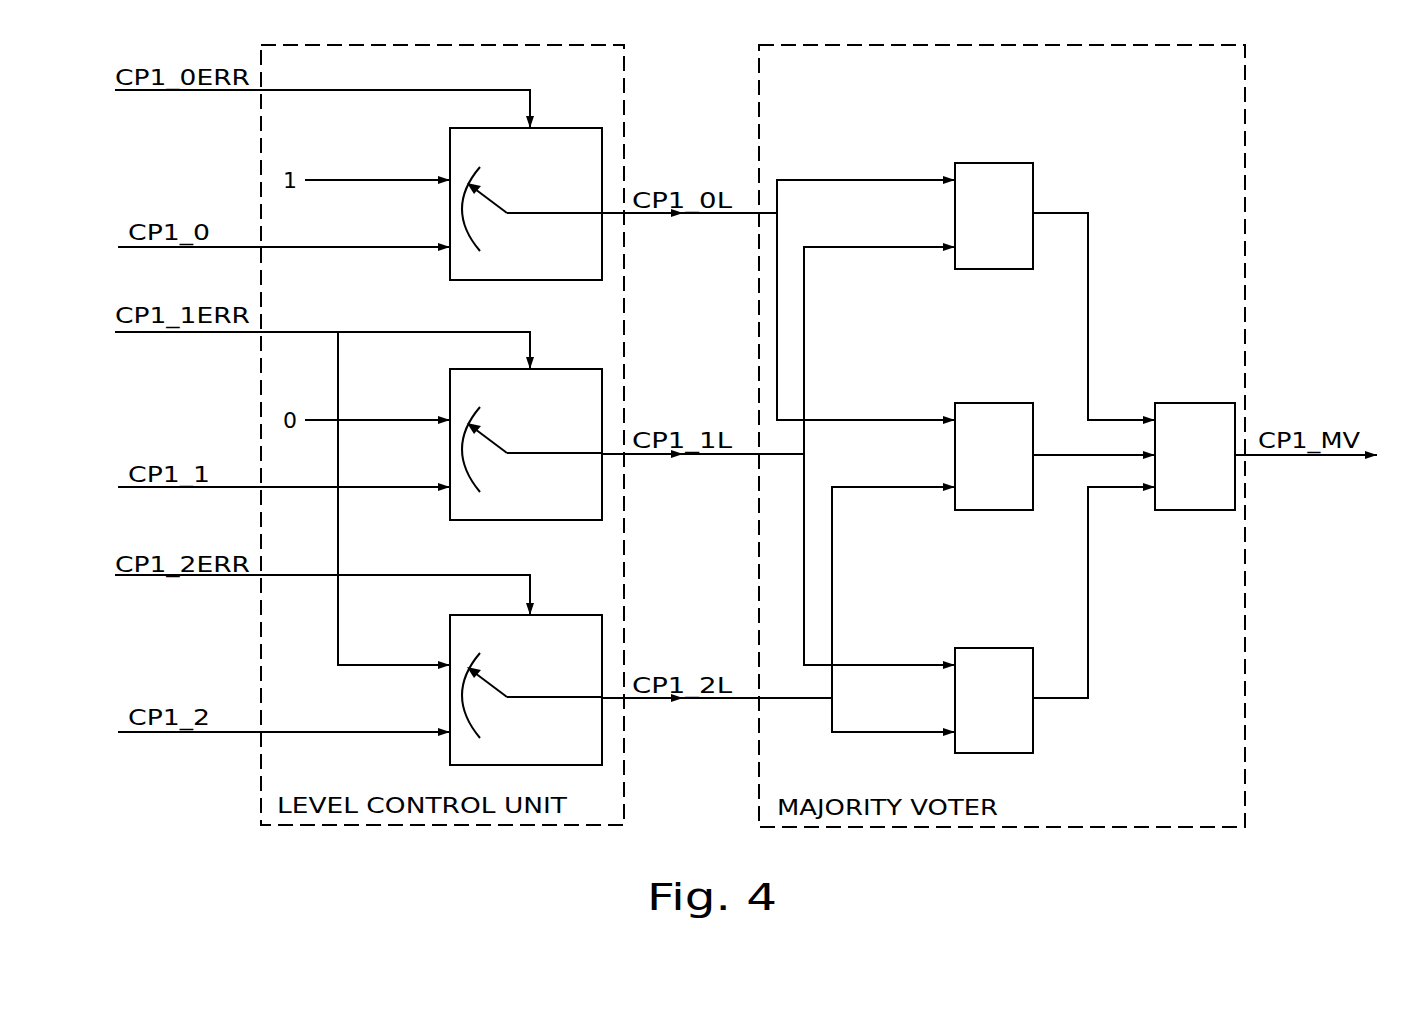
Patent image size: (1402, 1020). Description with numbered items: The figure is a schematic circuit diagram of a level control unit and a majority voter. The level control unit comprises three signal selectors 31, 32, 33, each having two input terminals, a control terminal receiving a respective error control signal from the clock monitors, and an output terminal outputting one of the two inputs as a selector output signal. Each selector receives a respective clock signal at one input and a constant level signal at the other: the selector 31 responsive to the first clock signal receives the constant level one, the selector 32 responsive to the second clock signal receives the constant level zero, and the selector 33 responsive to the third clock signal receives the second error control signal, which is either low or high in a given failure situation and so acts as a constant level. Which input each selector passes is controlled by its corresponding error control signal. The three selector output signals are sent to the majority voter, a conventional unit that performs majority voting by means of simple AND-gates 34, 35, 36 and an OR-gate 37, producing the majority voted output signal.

The signal selector 31 is at (569, 128).
The signal selector 32 is at (569, 369).
The signal selector 33 is at (569, 615).
The AND-gate 34 is at (991, 163).
The AND-gate 35 is at (991, 403).
The AND-gate 36 is at (991, 648).
The OR-gate 37 is at (1179, 403).